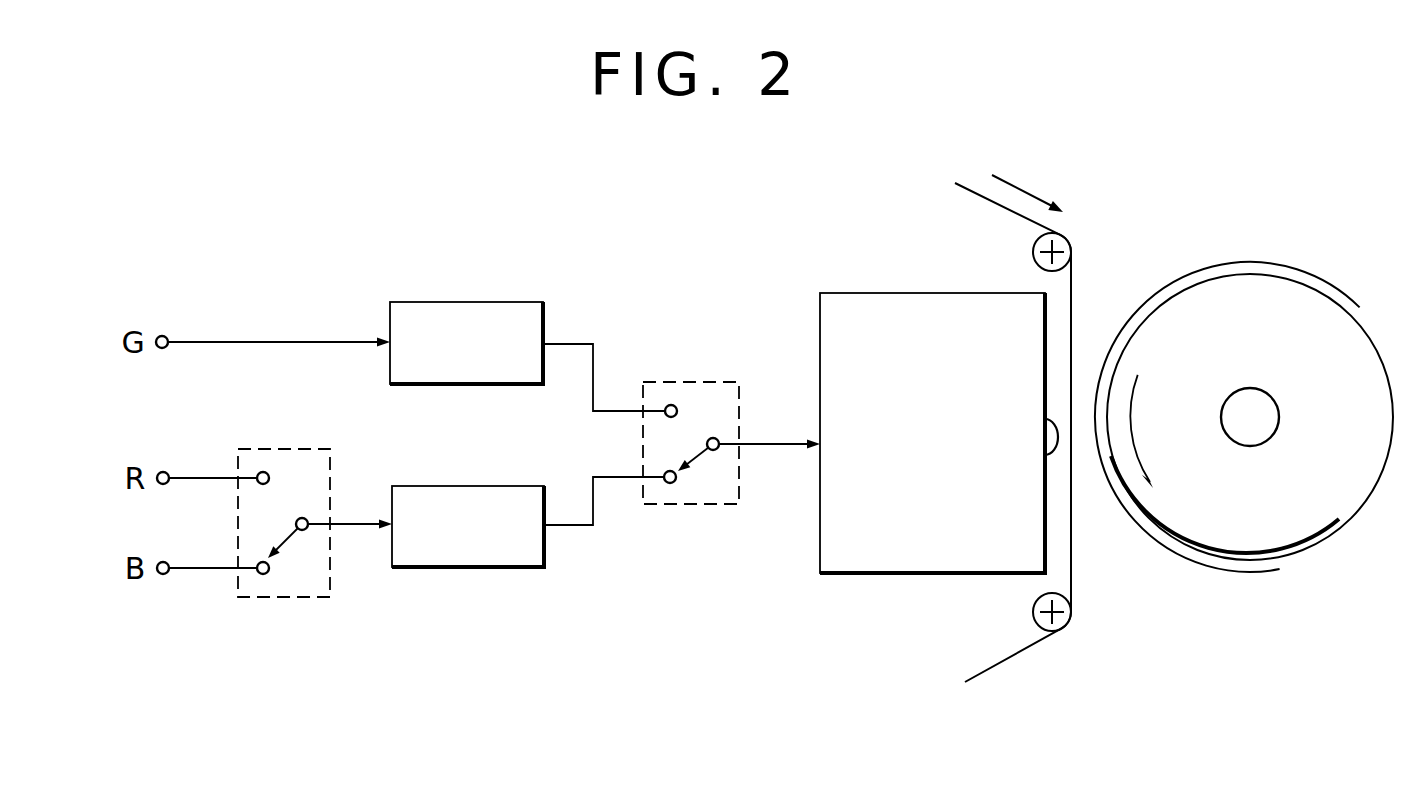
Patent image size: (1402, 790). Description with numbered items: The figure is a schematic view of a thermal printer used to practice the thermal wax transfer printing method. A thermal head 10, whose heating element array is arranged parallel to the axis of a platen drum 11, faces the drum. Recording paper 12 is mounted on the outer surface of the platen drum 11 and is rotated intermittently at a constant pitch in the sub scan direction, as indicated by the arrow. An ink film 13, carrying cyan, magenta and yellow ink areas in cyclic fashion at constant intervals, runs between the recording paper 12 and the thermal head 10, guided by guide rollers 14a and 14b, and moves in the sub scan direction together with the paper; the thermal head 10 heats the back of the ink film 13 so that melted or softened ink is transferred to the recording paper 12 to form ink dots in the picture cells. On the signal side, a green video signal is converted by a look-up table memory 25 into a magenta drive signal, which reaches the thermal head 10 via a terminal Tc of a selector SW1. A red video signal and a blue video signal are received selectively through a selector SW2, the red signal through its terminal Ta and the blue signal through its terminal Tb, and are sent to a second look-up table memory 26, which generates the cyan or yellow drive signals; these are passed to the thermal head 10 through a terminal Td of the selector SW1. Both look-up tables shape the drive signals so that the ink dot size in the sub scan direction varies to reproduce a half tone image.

The thermal head 10 is at (838, 573).
The platen drum 11 is at (1325, 526).
The recording paper 12 is at (1228, 262).
The ink film 13 is at (1073, 585).
The guide roller 14a is at (1033, 252).
The guide roller 14b is at (1033, 612).
The look-up table memory 25 is at (478, 302).
The look-up table memory 26 is at (475, 567).
The selector SW1 is at (727, 448).
The selector SW2 is at (315, 532).
The terminal Ta is at (263, 472).
The terminal Tb is at (263, 575).
The terminal Tc is at (671, 405).
The terminal Td is at (670, 483).